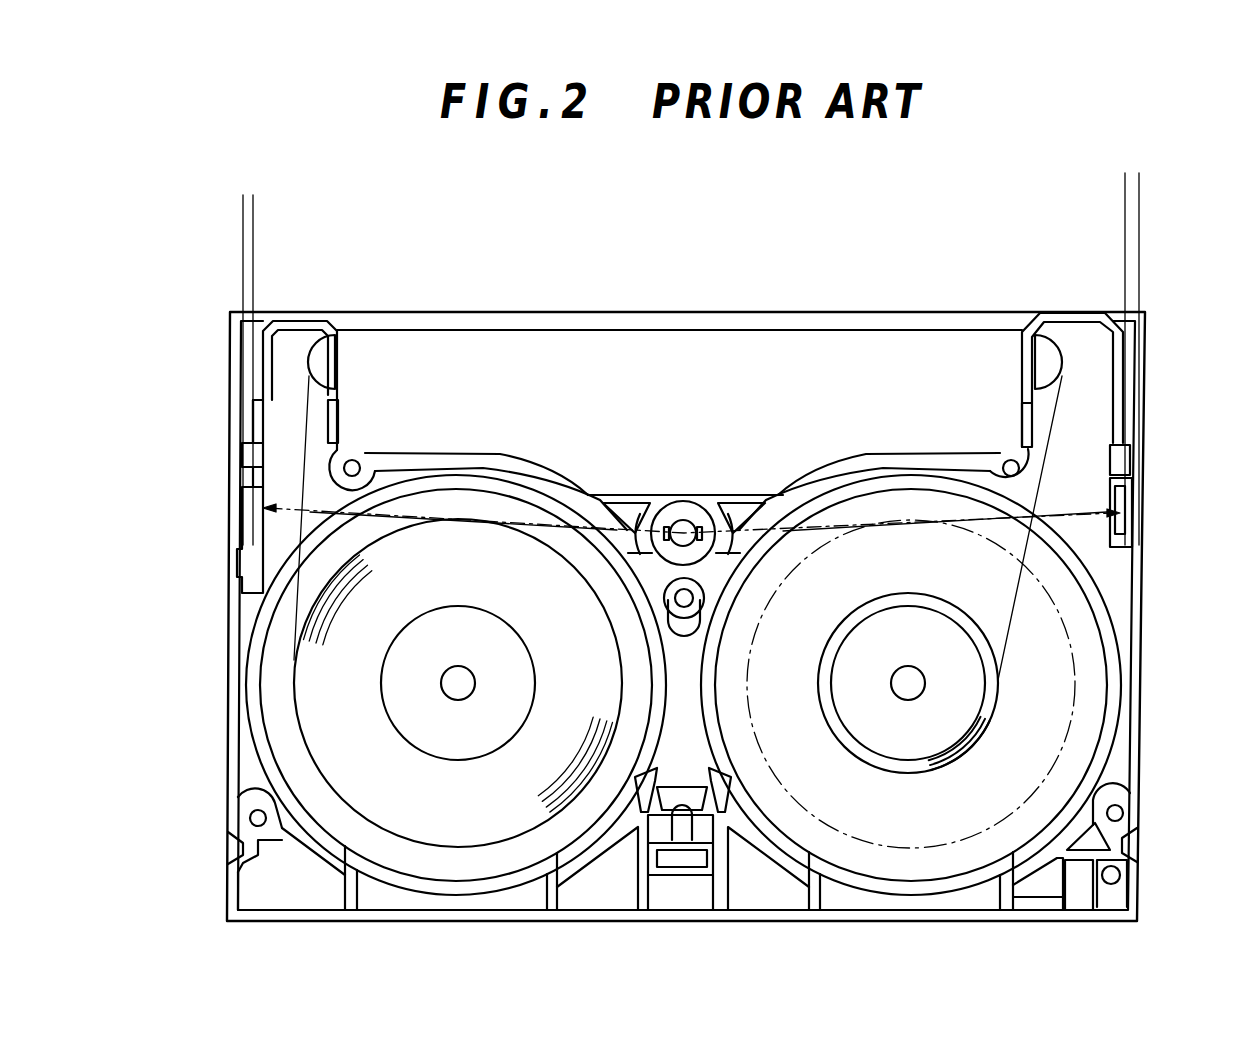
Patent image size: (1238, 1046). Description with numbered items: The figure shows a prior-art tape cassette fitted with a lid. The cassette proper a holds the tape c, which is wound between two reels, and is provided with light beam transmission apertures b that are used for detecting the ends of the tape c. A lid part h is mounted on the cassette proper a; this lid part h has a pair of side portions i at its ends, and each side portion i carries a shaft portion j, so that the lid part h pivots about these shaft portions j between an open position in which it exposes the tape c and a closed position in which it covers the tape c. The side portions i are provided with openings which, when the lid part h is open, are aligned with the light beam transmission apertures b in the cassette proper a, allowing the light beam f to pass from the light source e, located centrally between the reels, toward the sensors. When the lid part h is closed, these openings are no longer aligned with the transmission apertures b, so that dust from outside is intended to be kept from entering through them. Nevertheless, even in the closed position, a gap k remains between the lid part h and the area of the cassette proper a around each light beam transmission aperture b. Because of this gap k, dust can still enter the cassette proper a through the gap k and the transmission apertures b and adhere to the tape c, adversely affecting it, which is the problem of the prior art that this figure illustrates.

The cassette proper a is at (1070, 312).
The light beam transmission apertures b is at (252, 502).
The tape c is at (717, 329).
The light source e is at (681, 530).
The light beam f is at (505, 521).
The lid part h is at (935, 312).
The side portions i is at (229, 363).
The shaft portions j is at (232, 455).
The gap k is at (200, 213).